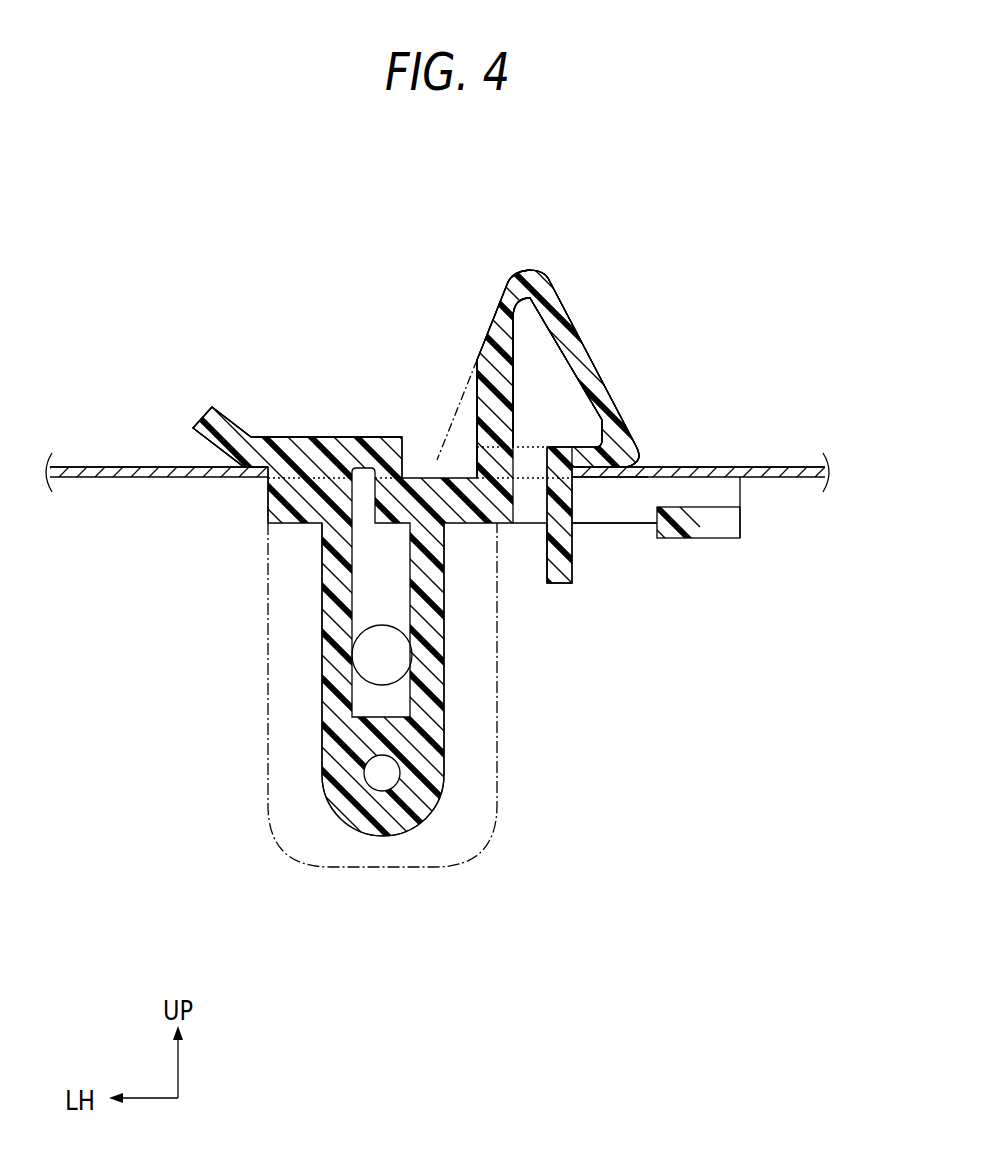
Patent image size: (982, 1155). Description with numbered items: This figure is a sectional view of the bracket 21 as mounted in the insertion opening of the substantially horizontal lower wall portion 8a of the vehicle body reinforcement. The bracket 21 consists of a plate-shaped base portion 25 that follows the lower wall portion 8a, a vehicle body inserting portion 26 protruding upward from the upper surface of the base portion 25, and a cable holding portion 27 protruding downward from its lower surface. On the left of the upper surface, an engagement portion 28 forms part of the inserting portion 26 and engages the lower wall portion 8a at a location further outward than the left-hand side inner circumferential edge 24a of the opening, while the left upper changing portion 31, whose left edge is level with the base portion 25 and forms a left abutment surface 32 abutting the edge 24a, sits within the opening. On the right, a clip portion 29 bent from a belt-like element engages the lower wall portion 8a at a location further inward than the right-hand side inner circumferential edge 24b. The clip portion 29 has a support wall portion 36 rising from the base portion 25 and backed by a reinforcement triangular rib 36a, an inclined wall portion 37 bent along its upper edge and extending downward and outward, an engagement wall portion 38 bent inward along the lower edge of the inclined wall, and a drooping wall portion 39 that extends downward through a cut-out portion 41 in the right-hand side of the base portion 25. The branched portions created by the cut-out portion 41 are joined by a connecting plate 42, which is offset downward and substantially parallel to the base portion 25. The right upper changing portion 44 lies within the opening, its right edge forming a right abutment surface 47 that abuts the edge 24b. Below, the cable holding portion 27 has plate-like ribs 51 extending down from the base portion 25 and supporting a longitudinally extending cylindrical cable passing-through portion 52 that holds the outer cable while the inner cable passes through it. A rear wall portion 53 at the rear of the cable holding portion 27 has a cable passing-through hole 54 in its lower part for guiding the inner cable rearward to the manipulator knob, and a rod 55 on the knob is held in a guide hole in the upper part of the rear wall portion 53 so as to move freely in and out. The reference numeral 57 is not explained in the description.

The bracket 21 is at (806, 268).
The lower wall portion 8a is at (780, 452).
The left-hand side inner circumferential edge 24a is at (268, 477).
The right-hand side inner circumferential edge 24b is at (607, 452).
The base portion 25 is at (256, 522).
The vehicle body inserting portion 26 is at (416, 374).
The cable holding portion 27 is at (304, 671).
The engagement portion 28 is at (185, 399).
The clip portion 29 is at (552, 262).
The left upper changing portion 31 is at (334, 424).
The left abutment surface 32 is at (262, 480).
The support wall portion 36 is at (492, 330).
The reinforcement triangular rib 36a is at (453, 440).
The inclined wall portion 37 is at (566, 300).
The engagement wall portion 38 is at (577, 472).
The drooping wall portion 39 is at (547, 545).
The cut-out portion 41 is at (665, 490).
The connecting plate 42 is at (706, 532).
The right upper changing portion 44 is at (536, 430).
The right abutment surface 47 is at (627, 478).
The ribs 51 is at (322, 716).
The cable passing-through portion 52 is at (444, 778).
The rear wall portion 53 is at (478, 838).
The cable passing-through hole 54 is at (383, 765).
The rod 55 is at (383, 628).
The right leg 57 is at (444, 697).